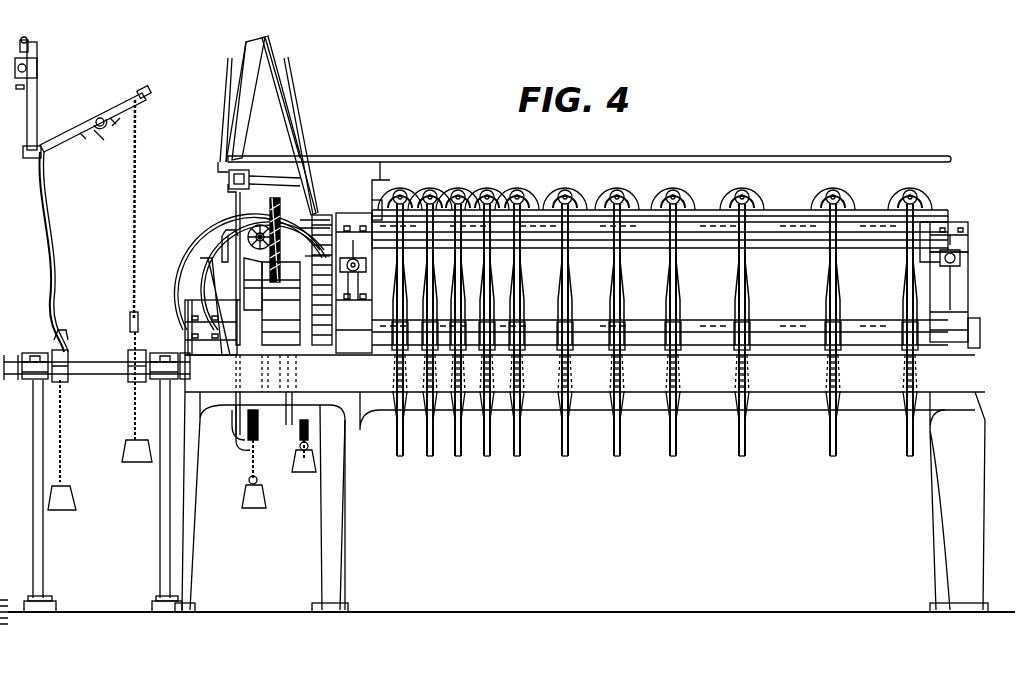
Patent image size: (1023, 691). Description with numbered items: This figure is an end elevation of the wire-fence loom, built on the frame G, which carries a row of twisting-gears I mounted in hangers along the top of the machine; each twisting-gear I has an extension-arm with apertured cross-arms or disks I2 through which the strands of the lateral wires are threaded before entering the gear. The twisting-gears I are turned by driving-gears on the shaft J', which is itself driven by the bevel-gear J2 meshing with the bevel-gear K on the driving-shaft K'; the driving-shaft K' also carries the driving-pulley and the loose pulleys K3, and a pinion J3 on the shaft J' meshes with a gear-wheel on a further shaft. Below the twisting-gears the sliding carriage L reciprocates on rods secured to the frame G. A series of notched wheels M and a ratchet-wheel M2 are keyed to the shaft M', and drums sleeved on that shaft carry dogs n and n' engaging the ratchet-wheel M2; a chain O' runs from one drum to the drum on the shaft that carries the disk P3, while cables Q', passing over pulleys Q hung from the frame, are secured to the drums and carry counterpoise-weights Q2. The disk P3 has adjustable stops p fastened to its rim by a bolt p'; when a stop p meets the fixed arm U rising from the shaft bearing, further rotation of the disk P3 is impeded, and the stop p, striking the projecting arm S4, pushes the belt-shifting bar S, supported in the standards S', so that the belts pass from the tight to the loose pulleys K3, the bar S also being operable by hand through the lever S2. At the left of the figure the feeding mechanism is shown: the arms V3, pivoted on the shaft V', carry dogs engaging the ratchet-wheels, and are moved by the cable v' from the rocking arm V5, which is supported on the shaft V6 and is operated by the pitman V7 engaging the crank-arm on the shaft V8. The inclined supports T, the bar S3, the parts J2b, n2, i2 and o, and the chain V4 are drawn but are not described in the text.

The shaft V8 is at (30, 46).
The pitman V7 is at (30, 102).
The rocking arm V5 is at (80, 128).
The shaft V6 is at (106, 144).
The chain V4 is at (132, 172).
The shaft V' is at (53, 252).
The arms V3 is at (126, 352).
The frame G is at (581, 483).
The lever S2 is at (358, 158).
The inclined supports T is at (270, 88).
The belt-shifting bar S is at (217, 177).
The standards S' is at (215, 236).
The slide bar S3 is at (274, 174).
The projecting arm S4 is at (240, 229).
The driving-shaft K' is at (243, 272).
The loose pulleys K3 is at (318, 208).
The bevel-gear K is at (264, 240).
The bevel-gear J2 is at (281, 218).
The shaft (right) J2b is at (930, 268).
The bar n2 is at (311, 248).
The shaft bearing i2 is at (353, 270).
The disk P3 is at (250, 262).
The arm U is at (240, 268).
The ratchet-wheel M2 is at (250, 280).
The chain O' is at (227, 303).
The dog n is at (249, 320).
The dog n' is at (223, 395).
The rod o is at (290, 360).
The bolt p' is at (229, 425).
The adjustable stops p is at (227, 438).
The pulleys Q is at (278, 432).
The cables Q' is at (276, 455).
The counterpoise-weights Q2 is at (246, 508).
The shaft J' is at (660, 238).
The sliding carriage L is at (628, 208).
The shaft M' is at (655, 322).
The notched wheels M is at (541, 453).
The twisting-gears I is at (598, 188).
The cross-arms or disks I2 is at (484, 182).
The pinion J3 is at (958, 258).